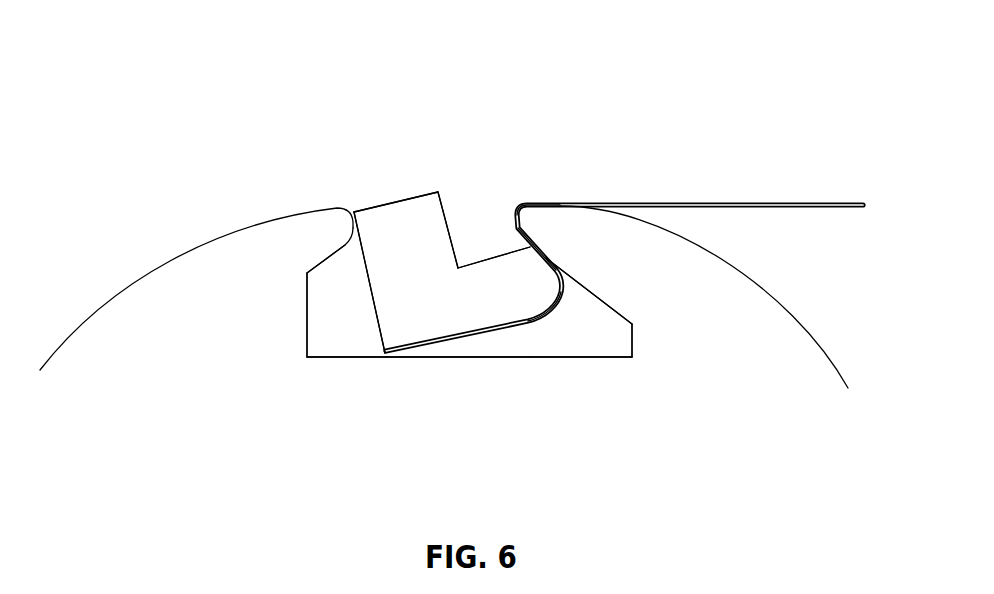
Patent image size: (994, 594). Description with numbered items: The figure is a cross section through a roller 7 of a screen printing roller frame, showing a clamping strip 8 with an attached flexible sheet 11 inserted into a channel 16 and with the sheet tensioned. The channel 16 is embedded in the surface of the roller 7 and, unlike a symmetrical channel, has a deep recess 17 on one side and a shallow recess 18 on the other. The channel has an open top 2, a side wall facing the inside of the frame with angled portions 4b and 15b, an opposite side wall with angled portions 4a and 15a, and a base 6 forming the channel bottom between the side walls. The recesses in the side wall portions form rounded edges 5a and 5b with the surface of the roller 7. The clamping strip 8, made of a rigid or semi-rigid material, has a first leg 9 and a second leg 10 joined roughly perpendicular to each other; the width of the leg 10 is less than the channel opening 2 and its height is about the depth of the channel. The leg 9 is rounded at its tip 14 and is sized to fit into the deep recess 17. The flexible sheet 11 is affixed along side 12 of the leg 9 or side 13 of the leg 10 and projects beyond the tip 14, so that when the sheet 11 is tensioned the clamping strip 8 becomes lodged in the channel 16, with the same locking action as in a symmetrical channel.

The open top 2 is at (502, 217).
The angled side wall portion 4a is at (326, 260).
The angled side wall portion 4b is at (613, 302).
The rounded edge 5a is at (332, 222).
The rounded edge 5b is at (537, 222).
The base 6 is at (442, 363).
The roller 7 is at (778, 302).
The clamping strip 8 is at (422, 185).
The first leg 9 is at (510, 293).
The second leg 10 is at (390, 242).
The flexible sheet 11 is at (742, 197).
The side of leg 9 12 is at (480, 333).
The side of leg 10 13 is at (378, 323).
The tip 14 is at (549, 270).
The angled side wall portion 15a is at (288, 303).
The angled side wall portion 15b is at (642, 340).
The channel 16 is at (472, 213).
The deep recess 17 is at (593, 330).
The shallow recess 18 is at (335, 342).